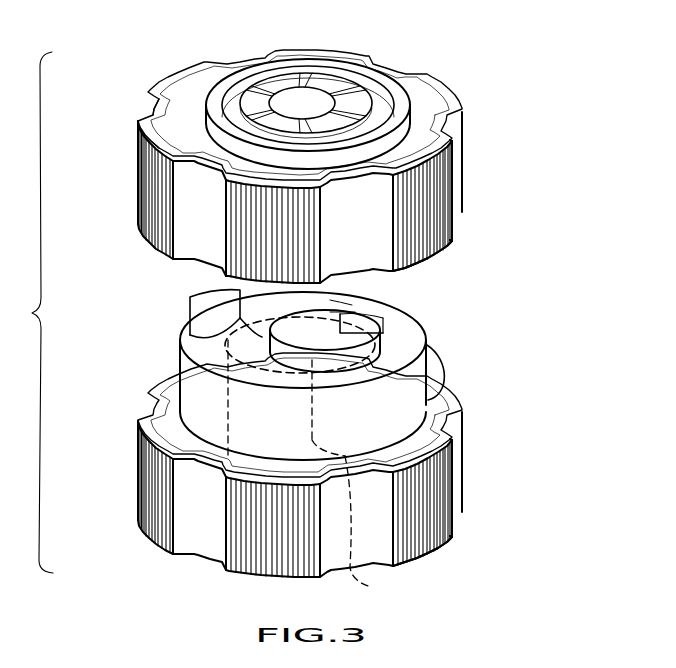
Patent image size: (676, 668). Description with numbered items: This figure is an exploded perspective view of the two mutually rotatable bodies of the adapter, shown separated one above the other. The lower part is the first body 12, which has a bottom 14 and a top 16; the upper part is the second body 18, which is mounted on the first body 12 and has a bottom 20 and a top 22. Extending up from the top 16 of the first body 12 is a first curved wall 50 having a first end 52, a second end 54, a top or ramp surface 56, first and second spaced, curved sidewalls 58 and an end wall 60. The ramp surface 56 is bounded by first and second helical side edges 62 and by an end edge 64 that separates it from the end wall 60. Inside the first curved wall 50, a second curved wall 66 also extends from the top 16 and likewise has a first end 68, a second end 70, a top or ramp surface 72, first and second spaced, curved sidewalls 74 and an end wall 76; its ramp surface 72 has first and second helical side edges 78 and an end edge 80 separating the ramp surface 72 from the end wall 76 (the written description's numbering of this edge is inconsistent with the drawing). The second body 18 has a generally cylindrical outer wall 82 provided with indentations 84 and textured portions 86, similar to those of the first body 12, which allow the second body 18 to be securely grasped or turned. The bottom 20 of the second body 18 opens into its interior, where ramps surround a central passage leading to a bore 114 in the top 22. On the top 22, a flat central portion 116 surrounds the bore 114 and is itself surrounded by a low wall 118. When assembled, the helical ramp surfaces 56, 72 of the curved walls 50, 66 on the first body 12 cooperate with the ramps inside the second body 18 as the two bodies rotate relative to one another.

The first body 12 is at (465, 490).
The bottom 14 is at (418, 560).
The top 16 is at (440, 396).
The second body 18 is at (465, 130).
The bottom 20 is at (465, 215).
The top 22 is at (432, 86).
The first curved wall 50 is at (200, 402).
The first end 52 is at (250, 335).
The second end 54 is at (222, 292).
The ramp surface 56 is at (200, 340).
The curved sidewalls 58 is at (205, 357).
The end wall 60 is at (345, 293).
The helical side edges 62 is at (380, 358).
The end edge 64 is at (236, 300).
The second curved wall 66 is at (380, 335).
The first end 68 is at (362, 576).
The second end 70 is at (345, 340).
The ramp surface 72 is at (330, 300).
The curved sidewalls 74 is at (380, 345).
The end wall 76 is at (330, 346).
The helical side edges 78 is at (330, 312).
The keyway 80 is at (345, 320).
The outer wall 82 is at (468, 168).
The lobe top 84 is at (160, 115).
The textured portions 86 is at (150, 178).
The bore 114 is at (315, 98).
The flat central portion 116 is at (343, 95).
The low wall 118 is at (395, 76).